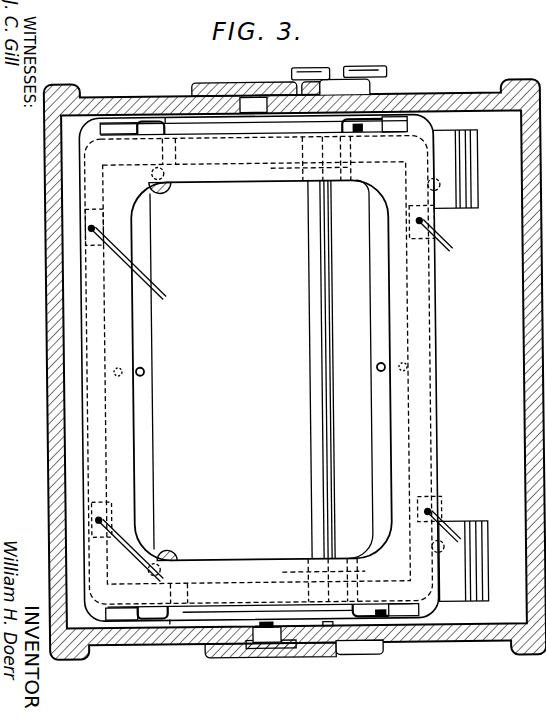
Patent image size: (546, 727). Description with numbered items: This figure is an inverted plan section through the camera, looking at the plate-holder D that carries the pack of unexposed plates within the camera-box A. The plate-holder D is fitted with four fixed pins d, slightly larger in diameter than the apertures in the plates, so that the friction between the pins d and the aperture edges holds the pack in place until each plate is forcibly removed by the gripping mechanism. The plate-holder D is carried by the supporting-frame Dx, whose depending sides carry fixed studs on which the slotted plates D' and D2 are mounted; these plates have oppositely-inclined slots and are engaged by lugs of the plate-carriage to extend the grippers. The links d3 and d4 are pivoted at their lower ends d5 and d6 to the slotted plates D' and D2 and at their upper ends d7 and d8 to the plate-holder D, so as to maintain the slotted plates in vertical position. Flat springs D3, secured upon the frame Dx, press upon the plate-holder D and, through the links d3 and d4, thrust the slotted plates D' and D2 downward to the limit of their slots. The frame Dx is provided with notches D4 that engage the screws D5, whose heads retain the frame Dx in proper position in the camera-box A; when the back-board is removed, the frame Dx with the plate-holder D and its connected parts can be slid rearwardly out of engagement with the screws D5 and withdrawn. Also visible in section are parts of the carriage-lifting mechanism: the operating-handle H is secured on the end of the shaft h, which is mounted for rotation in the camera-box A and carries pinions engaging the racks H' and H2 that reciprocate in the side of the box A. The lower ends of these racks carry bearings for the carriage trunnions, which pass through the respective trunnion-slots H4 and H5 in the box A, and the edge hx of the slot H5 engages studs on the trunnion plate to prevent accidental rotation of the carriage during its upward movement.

The camera-box A is at (48, 367).
The plate-holder D is at (261, 370).
The slotted plate D' is at (400, 366).
The slotted plate D2 is at (115, 133).
The flat spring D3 is at (146, 360).
The notch D4 is at (156, 173).
The screw D5 is at (164, 193).
The supporting-frame Dx is at (113, 128).
The pin d is at (96, 226).
The link d3 is at (360, 133).
The link d4 is at (168, 116).
The lower pivot of link d3 d5 is at (376, 121).
The lower pivot of link d4 d6 is at (150, 134).
The upper pivot of link d3 d7 is at (317, 369).
The upper pivot of link d4 d8 is at (179, 153).
The shaft h is at (312, 349).
The edge of trunnion-slot hx is at (263, 622).
The operating-handle H is at (338, 61).
The rack H' is at (249, 85).
The rack H2 is at (265, 650).
The trunnion-slot H4 is at (250, 104).
The trunnion-slot H5 is at (257, 648).